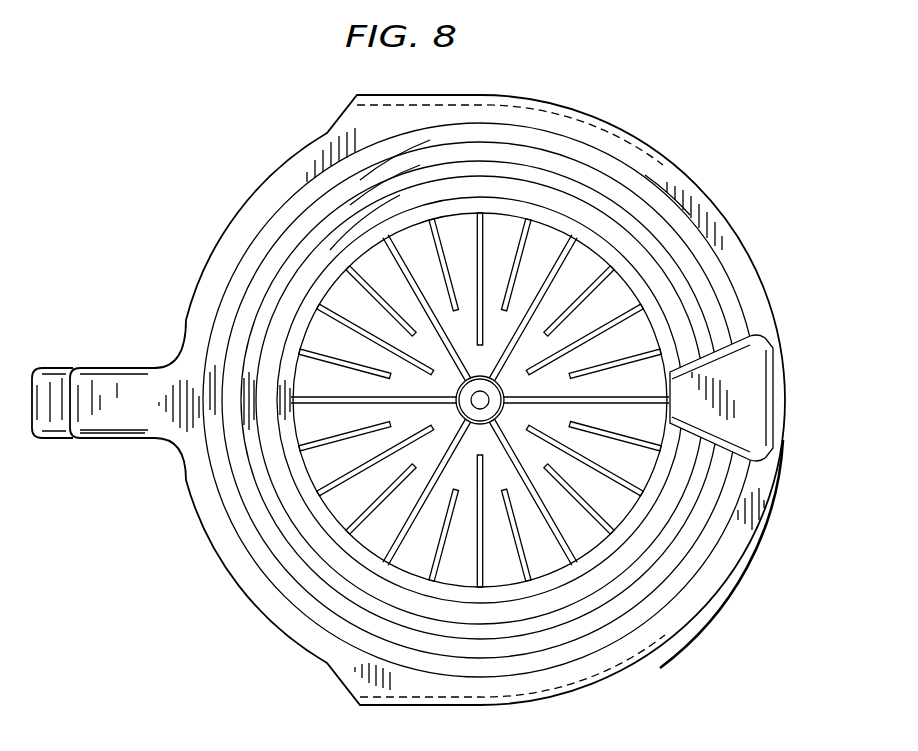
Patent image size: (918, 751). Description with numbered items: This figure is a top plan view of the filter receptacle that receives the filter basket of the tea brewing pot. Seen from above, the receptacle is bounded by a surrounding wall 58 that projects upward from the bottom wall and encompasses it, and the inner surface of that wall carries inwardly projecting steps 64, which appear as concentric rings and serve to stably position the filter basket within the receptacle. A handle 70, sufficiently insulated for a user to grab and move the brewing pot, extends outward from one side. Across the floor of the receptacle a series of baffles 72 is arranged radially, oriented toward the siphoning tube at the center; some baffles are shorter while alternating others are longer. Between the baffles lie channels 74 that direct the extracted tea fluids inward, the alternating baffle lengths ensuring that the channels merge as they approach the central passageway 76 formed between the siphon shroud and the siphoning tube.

The surrounding wall 58 is at (740, 258).
The inwardly projecting steps 64 is at (706, 544).
The handle 70 is at (104, 397).
The baffles 72 is at (625, 475).
The channels 74 is at (602, 440).
The passageway 76 is at (480, 433).